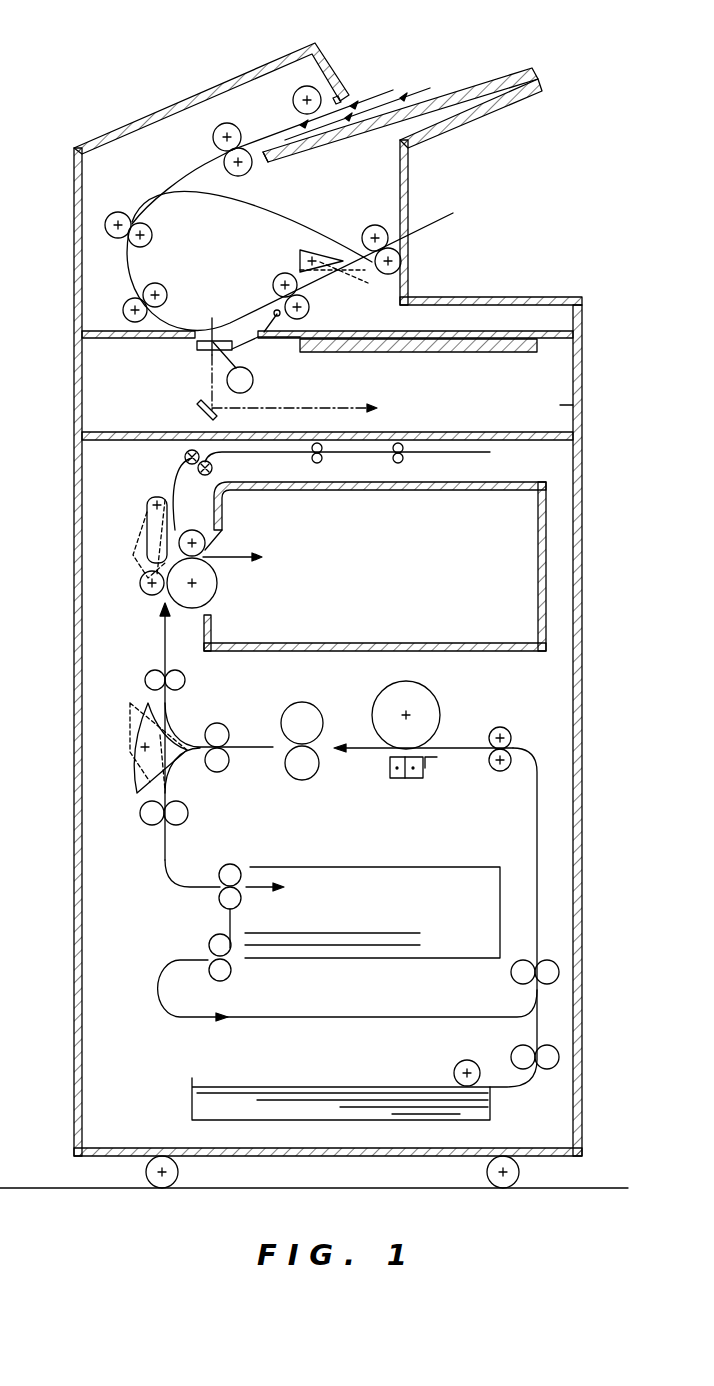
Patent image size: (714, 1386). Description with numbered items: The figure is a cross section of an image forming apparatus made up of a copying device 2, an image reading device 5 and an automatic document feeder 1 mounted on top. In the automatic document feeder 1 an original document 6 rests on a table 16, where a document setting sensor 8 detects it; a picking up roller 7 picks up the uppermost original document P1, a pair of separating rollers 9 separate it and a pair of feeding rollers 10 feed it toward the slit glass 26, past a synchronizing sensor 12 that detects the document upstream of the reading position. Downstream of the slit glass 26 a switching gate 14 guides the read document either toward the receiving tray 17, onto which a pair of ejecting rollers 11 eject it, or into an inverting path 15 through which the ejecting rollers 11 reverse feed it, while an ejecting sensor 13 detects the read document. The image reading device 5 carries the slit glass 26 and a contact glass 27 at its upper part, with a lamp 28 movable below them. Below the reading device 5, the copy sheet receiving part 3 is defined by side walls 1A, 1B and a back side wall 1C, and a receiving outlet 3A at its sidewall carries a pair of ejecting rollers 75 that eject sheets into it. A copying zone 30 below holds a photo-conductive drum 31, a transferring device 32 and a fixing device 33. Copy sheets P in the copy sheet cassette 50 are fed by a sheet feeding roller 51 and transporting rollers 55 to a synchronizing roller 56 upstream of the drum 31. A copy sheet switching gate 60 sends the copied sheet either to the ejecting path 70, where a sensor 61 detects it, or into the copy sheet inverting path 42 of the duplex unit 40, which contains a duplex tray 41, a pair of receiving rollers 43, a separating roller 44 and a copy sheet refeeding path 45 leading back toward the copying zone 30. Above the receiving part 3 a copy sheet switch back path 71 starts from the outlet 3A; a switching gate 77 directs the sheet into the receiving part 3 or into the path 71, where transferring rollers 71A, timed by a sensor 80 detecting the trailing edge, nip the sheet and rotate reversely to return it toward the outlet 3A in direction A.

The automatic document feeder 1 is at (277, 60).
The copying device 2 is at (82, 771).
The copy sheet receiving part 3 is at (374, 97).
The image reading device 5 is at (570, 405).
The original document 6 is at (407, 68).
The picking up roller 7 is at (312, 88).
The document setting sensor 8 is at (313, 170).
The separating rollers 9 is at (223, 125).
The feeding rollers 10 is at (108, 214).
The ejecting rollers 11 is at (400, 255).
The synchronizing sensor 12 is at (182, 322).
The ejecting sensor 13 is at (351, 280).
The switching gate 14 is at (300, 252).
The inverting path 15 is at (293, 235).
The table 16 is at (540, 90).
The receiving tray 17 is at (537, 297).
The slit glass 26 is at (200, 350).
The contact glass 27 is at (520, 352).
The lamp 28 is at (253, 380).
The copying zone 30 is at (462, 760).
The photo-conductive drum 31 is at (437, 703).
The transferring device 32 is at (423, 778).
The fixing device 33 is at (320, 705).
The duplex unit 40 is at (497, 893).
The duplex tray 41 is at (500, 933).
The copy sheet inverting path 42 is at (165, 860).
The receiving roller 43 is at (237, 863).
The separating roller 44 is at (207, 945).
The copy sheet refeeding path 45 is at (158, 997).
The copy sheet cassette 50 is at (490, 1112).
The sheet feeding roller 51 is at (455, 1070).
The transporting rollers 55 is at (150, 677).
The synchronizing roller 56 is at (513, 733).
The copy sheet switching gate 60 is at (131, 772).
The sensor 61 is at (138, 697).
The ejecting path 70 is at (163, 637).
The copy sheet switch back path 71 is at (447, 455).
The transferring rollers 71A is at (185, 457).
The ejecting rollers 75 is at (217, 592).
The switching gate 77 is at (150, 525).
The sensor 80 is at (178, 527).
The side wall 1A is at (190, 632).
The side wall 1B is at (557, 598).
The back side wall 1C is at (528, 630).
The receiving outlet 3A is at (210, 550).
The direction A is at (245, 557).
The copy sheets P is at (240, 1100).
The uppermost original document P1 is at (312, 103).